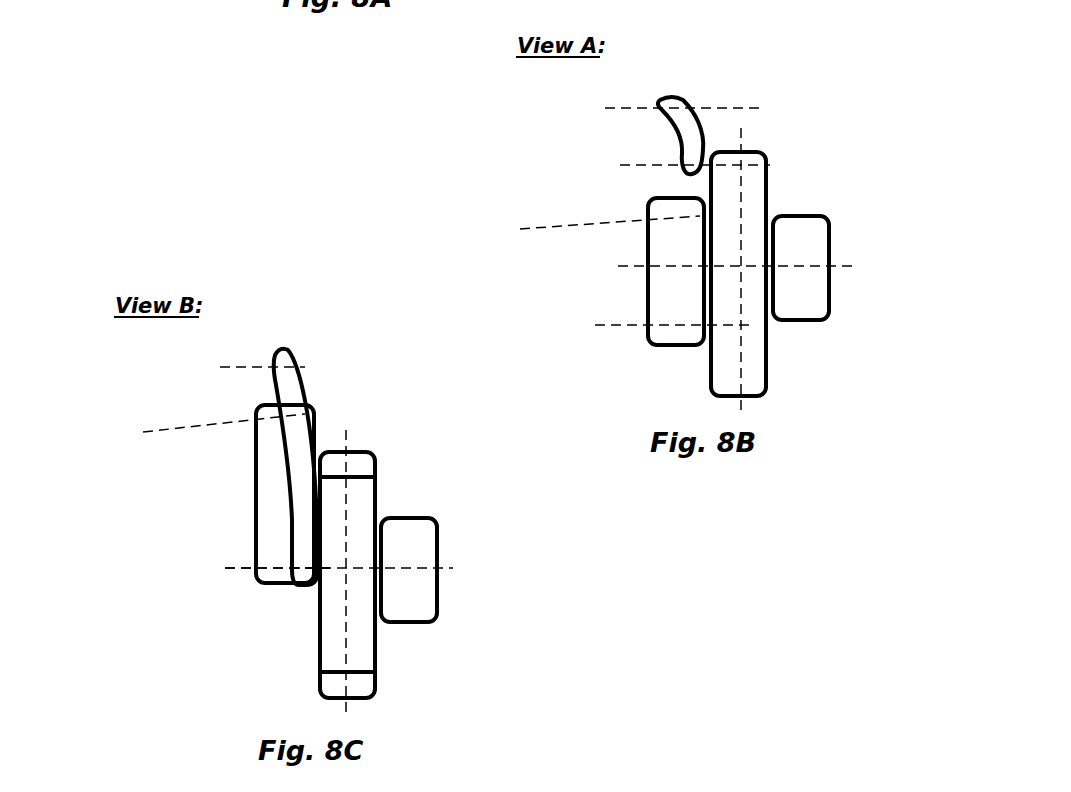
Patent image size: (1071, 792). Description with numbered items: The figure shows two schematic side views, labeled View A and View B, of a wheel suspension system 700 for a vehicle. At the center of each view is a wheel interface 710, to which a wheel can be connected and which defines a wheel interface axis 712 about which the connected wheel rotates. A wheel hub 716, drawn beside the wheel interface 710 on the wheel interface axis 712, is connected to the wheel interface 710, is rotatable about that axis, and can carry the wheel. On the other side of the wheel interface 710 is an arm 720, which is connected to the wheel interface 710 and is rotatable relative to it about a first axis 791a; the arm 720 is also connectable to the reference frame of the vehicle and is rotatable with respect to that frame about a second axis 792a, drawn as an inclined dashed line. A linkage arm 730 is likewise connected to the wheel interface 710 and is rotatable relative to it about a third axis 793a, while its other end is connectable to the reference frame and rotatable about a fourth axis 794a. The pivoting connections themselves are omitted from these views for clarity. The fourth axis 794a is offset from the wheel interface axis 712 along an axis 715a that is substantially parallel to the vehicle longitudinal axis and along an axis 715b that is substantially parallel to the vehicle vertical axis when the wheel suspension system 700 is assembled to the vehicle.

In FIG. 8B, the wheel suspension system 700 is at (497, 57).
In FIG. 8C, the wheel suspension system 700 is at (97, 317).
In FIG. 8B, the wheel interface 710 is at (766, 358).
In FIG. 8C, the wheel interface 710 is at (375, 665).
In FIG. 8B, the wheel interface axis 712 is at (850, 266).
In FIG. 8C, the wheel interface axis 712 is at (450, 568).
In FIG. 8C, the axis parallel to the vehicle longitudinal axis 715a is at (348, 440).
In FIG. 8B, the axis parallel to the vehicle vertical axis 715b is at (743, 135).
In FIG. 8B, the wheel hub 716 is at (829, 241).
In FIG. 8C, the wheel hub 716 is at (437, 545).
In FIG. 8B, the arm 720 is at (648, 212).
In FIG. 8C, the arm 720 is at (258, 500).
In FIG. 8B, the linkage arm 730 is at (703, 130).
In FIG. 8C, the linkage arm 730 is at (296, 467).
In FIG. 8B, the first axis 791a is at (595, 325).
In FIG. 8C, the first axis 791a is at (225, 568).
In FIG. 8B, the second axis 792a is at (553, 226).
In FIG. 8C, the second axis 792a is at (165, 432).
In FIG. 8B, the third axis 793a is at (778, 165).
In FIG. 8C, the third axis 793a is at (280, 583).
In FIG. 8B, the fourth axis 794a is at (625, 108).
In FIG. 8C, the fourth axis 794a is at (240, 367).